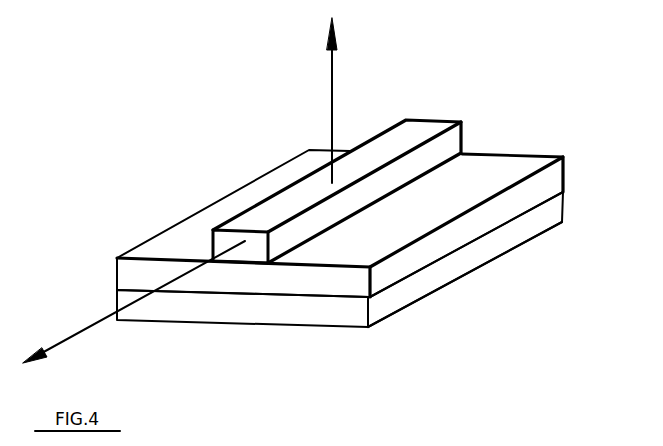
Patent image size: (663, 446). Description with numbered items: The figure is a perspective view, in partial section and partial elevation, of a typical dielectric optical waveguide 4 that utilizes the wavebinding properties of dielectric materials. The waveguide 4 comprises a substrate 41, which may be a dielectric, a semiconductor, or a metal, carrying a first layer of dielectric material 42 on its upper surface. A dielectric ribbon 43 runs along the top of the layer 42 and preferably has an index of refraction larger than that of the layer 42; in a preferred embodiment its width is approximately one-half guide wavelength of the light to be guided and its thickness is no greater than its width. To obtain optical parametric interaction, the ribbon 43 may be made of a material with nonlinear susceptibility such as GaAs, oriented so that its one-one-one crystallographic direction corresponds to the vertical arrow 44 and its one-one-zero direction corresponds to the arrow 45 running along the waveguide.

The dielectric waveguide 4 is at (314, 190).
The substrate 41 is at (385, 305).
The first layer of dielectric material 42 is at (533, 187).
The dielectric ribbon 43 is at (438, 147).
The arrow 44 is at (333, 95).
The arrow 45 is at (98, 320).